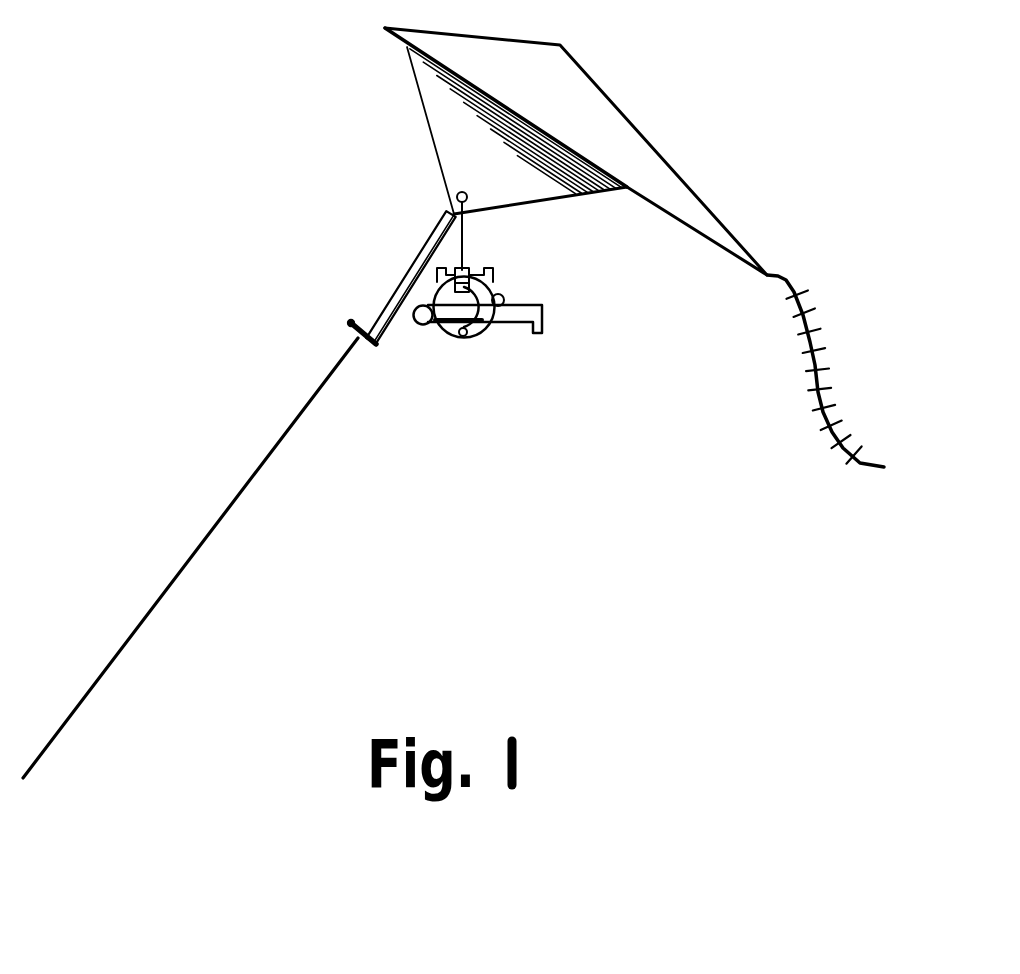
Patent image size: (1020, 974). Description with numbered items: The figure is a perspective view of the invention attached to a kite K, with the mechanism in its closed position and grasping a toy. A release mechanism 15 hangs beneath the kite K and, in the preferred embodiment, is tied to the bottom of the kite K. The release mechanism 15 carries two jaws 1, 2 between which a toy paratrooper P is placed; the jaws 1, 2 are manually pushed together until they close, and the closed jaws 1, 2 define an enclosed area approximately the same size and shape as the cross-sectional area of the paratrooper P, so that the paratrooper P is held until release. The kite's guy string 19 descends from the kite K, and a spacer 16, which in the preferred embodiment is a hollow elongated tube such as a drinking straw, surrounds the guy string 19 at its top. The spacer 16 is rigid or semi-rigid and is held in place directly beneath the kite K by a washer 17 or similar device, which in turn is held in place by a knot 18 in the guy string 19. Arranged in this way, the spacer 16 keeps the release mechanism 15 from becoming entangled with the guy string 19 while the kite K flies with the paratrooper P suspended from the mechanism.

The jaw 1 is at (485, 325).
The jaw 2 is at (450, 330).
The release mechanism 15 is at (492, 290).
The spacer 16 is at (392, 290).
The washer 17 is at (349, 321).
The knot 18 is at (355, 338).
The guy string 19 is at (195, 553).
The kite K is at (617, 130).
The paratrooper P is at (492, 328).